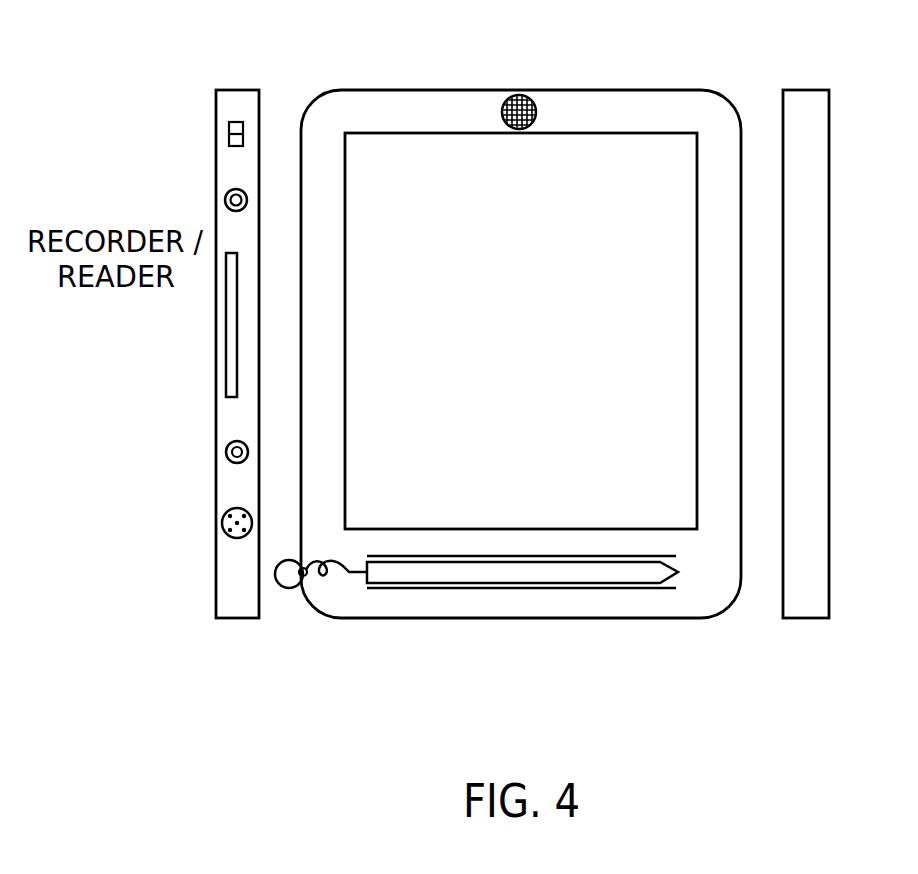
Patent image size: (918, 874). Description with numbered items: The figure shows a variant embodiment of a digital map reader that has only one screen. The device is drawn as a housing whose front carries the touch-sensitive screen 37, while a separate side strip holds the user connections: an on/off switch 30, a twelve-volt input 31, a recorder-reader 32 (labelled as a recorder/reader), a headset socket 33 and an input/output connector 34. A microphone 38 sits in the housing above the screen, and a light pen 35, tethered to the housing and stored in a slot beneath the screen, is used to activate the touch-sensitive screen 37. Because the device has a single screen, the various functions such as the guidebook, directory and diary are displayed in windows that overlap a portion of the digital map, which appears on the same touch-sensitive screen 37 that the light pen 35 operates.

The on/off switch 30 is at (230, 135).
The 12 V input 31 is at (224, 199).
The recorder-reader 32 is at (227, 365).
The headset socket 33 is at (227, 453).
The input/output connector 34 is at (223, 523).
The light pen 35 is at (555, 583).
The touch-sensitive screen 37 is at (619, 131).
The microphone 38 is at (519, 92).